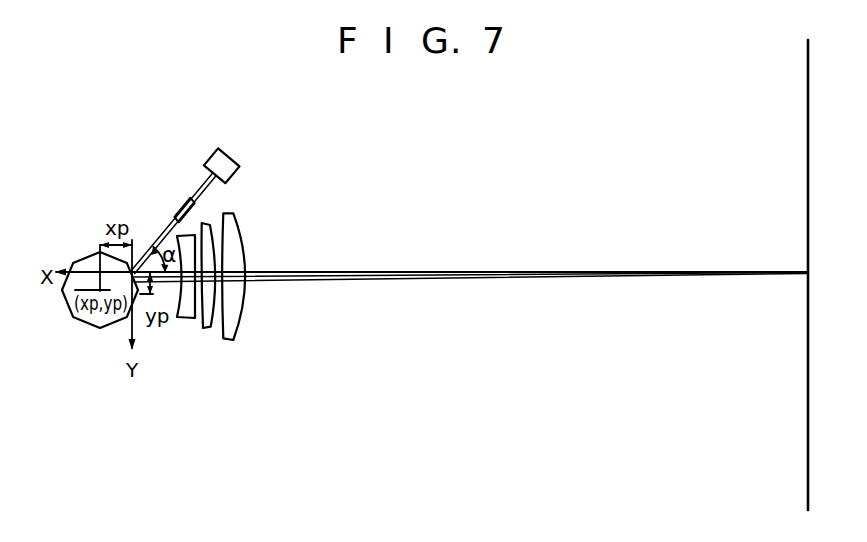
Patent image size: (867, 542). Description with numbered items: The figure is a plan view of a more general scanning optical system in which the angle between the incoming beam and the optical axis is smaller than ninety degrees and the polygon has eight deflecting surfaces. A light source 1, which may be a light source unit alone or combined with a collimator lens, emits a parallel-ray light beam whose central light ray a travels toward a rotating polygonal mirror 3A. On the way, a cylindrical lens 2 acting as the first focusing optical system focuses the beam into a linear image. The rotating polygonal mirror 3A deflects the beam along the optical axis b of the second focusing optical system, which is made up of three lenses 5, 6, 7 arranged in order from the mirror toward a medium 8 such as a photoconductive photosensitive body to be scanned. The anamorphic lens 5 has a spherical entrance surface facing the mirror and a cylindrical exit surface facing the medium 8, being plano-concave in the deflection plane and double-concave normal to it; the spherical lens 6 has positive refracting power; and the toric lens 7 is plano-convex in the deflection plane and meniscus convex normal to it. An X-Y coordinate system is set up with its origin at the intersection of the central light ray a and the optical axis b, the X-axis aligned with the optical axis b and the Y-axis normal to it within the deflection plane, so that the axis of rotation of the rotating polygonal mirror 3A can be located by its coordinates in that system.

The light source 1 is at (215, 155).
The cylindrical lens 2 is at (183, 204).
The rotating polygonal mirror 3A is at (84, 259).
The anamorphic lens 5 is at (183, 320).
The spherical lens 6 is at (205, 329).
The toric lens 7 is at (227, 341).
The medium 8 is at (808, 172).
The central light ray a is at (162, 241).
The optical axis b is at (150, 283).